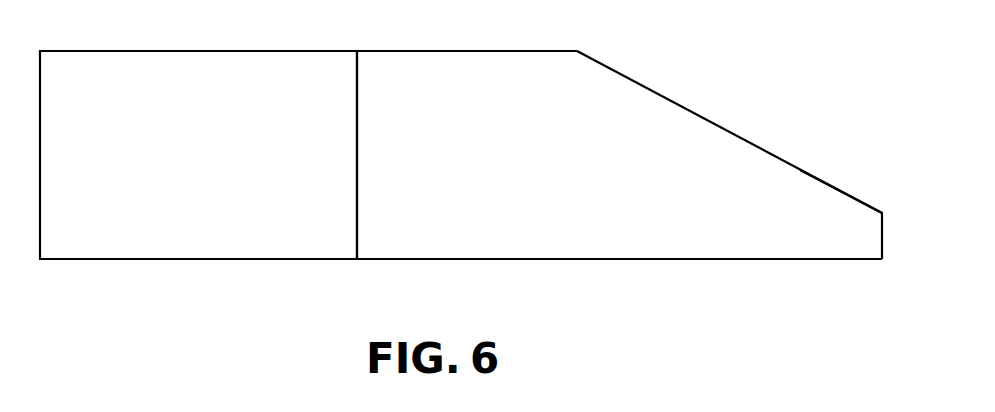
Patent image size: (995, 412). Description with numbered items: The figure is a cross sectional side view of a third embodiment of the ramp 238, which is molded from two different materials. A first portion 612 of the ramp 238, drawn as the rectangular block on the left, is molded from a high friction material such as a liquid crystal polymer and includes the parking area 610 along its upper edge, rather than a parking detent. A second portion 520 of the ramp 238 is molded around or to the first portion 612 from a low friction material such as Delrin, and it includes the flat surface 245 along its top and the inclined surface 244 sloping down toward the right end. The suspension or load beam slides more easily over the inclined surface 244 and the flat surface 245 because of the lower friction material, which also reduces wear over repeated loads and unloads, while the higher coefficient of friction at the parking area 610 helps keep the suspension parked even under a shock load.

The parking area 610 is at (190, 51).
The first portion 612 is at (182, 245).
The flat surface 245 is at (452, 52).
The inclined surface 244 is at (727, 130).
The second portion 520 is at (818, 202).
The ramp 238 is at (742, 248).